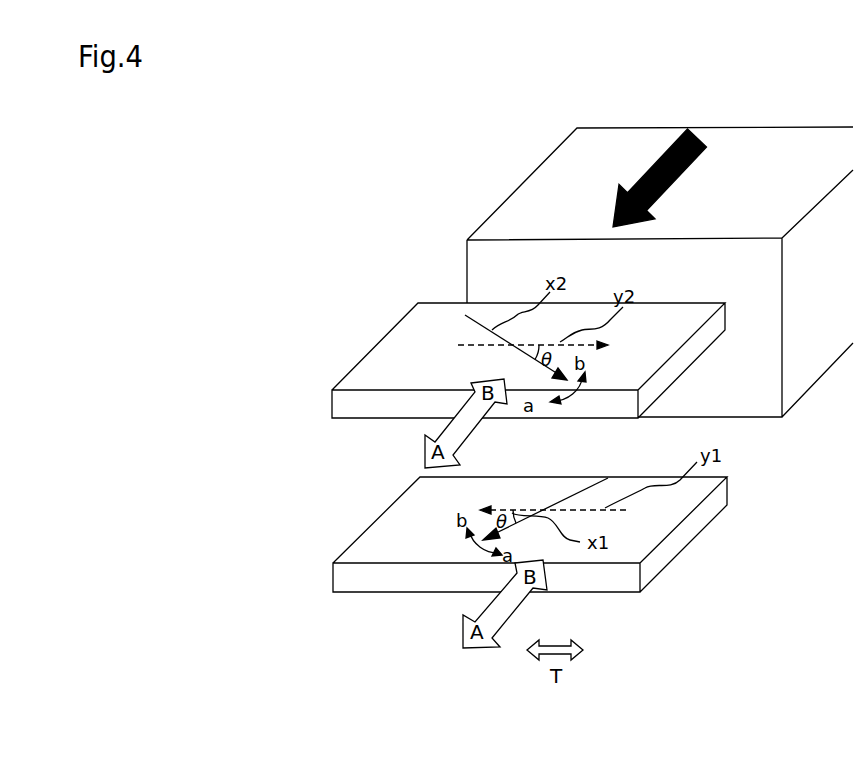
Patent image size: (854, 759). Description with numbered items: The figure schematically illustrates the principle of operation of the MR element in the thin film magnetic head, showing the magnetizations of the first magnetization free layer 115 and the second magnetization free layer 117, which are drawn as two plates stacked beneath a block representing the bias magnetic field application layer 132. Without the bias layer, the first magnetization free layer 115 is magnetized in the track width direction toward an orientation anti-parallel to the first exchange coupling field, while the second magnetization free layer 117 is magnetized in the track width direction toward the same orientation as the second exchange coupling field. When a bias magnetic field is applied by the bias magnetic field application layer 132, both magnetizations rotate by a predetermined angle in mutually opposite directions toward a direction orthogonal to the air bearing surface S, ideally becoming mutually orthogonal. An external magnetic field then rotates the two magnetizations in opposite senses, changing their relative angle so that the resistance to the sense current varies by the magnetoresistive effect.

The bias magnetic field application layer 132 is at (523, 183).
The second magnetization free layer 117 is at (386, 335).
The first magnetization free layer 115 is at (386, 510).
The air bearing surface S is at (598, 408).